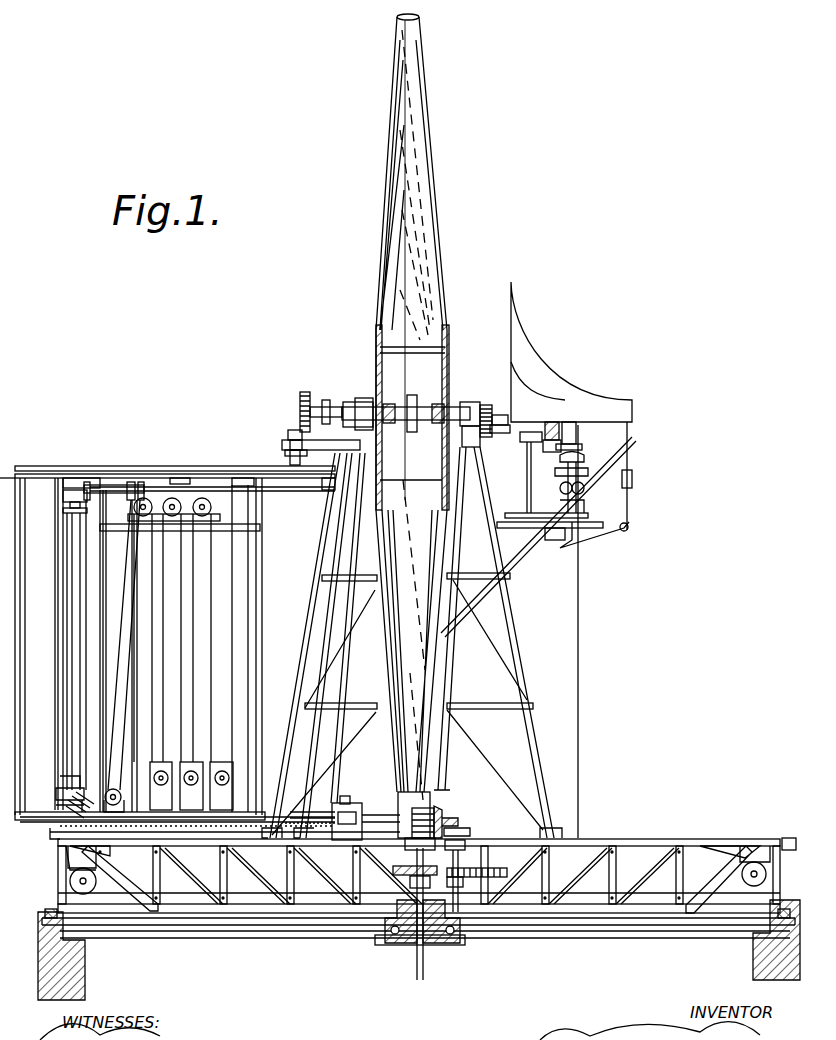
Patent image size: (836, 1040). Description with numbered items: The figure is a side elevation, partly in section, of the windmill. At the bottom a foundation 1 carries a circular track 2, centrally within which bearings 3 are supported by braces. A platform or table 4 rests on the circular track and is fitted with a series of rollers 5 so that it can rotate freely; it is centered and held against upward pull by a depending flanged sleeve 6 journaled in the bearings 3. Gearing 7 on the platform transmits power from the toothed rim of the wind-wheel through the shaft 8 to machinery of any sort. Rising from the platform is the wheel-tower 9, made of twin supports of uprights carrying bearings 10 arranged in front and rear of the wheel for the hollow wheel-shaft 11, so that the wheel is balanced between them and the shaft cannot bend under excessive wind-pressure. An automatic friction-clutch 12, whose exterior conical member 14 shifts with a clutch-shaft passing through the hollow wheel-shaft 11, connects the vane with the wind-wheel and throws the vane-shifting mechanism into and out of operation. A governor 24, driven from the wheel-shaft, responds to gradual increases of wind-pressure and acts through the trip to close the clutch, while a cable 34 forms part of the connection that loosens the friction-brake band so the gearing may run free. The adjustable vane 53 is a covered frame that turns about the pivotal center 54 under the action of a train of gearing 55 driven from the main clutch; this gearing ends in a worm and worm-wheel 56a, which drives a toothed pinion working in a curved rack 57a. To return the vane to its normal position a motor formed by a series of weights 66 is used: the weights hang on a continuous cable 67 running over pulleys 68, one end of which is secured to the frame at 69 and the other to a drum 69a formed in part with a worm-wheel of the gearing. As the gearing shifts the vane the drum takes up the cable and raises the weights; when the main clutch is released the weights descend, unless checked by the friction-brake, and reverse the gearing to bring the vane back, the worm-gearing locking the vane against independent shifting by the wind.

The foundation 1 is at (86, 972).
The circular track 2 is at (60, 892).
The bearings 3 is at (390, 943).
The platform or table 4 is at (585, 845).
The rollers 5 is at (85, 885).
The depending flanged sleeve 6 is at (430, 943).
The gearing 7 is at (470, 836).
The shaft 8 is at (415, 972).
The wheel-tower 9 is at (315, 638).
The bearings 10 is at (352, 400).
The hollow wheel-shaft 11 is at (400, 410).
The automatic friction-clutch 12 is at (320, 410).
The exterior clutch member 14 is at (584, 372).
The governor 24 is at (588, 490).
The cable 34 is at (372, 698).
The adjustable vane 53 is at (164, 470).
The pivotal center 54 is at (356, 790).
The train of gearing 55 is at (78, 490).
The worm-wheel 56a is at (150, 838).
The curved rack 57a is at (292, 818).
The weights 66 is at (222, 762).
The continuous cable 67 is at (236, 568).
The pulleys 68 is at (200, 512).
The frame attachment point 69 is at (226, 478).
The drum 69a is at (112, 490).